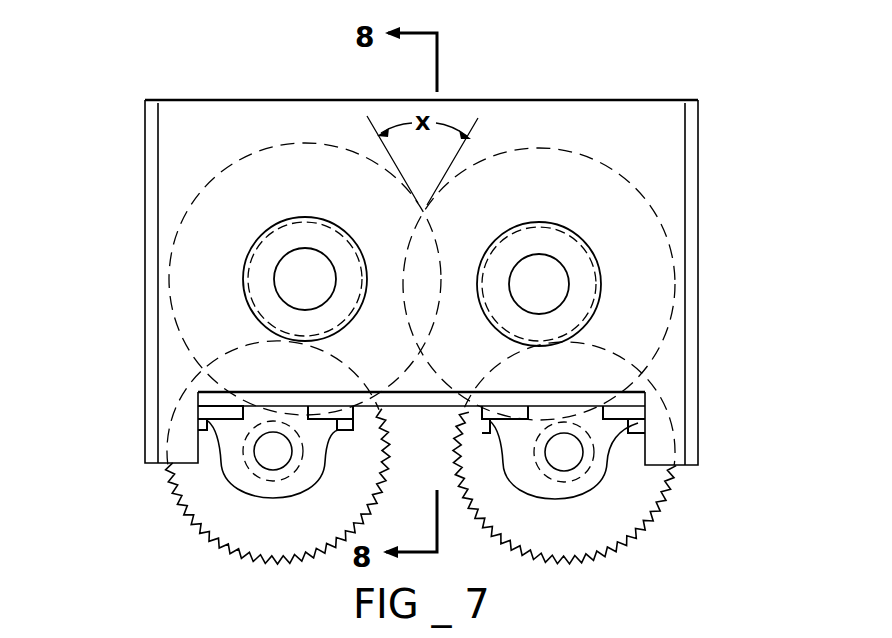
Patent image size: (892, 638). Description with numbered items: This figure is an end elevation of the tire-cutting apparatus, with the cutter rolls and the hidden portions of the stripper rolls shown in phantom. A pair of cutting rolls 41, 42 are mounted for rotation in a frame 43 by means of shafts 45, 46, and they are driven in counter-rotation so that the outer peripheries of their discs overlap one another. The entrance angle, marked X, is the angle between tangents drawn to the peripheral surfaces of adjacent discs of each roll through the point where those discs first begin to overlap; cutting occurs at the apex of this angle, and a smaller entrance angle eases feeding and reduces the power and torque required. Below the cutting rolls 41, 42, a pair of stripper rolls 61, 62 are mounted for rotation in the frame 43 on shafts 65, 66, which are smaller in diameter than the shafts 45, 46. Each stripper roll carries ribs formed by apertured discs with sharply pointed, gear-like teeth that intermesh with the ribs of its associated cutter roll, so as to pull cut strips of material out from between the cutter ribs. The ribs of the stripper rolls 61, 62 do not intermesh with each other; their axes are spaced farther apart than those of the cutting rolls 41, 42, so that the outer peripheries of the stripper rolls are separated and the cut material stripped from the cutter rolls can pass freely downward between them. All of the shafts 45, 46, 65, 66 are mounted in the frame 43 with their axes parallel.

The cutting roll 41 is at (294, 143).
The cutting roll 42 is at (519, 147).
The frame 43 is at (153, 207).
The shaft 45 is at (289, 275).
The shaft 46 is at (552, 284).
The stripper roll 61 is at (220, 521).
The stripper roll 62 is at (593, 536).
The shaft 65 is at (267, 453).
The shaft 66 is at (573, 457).